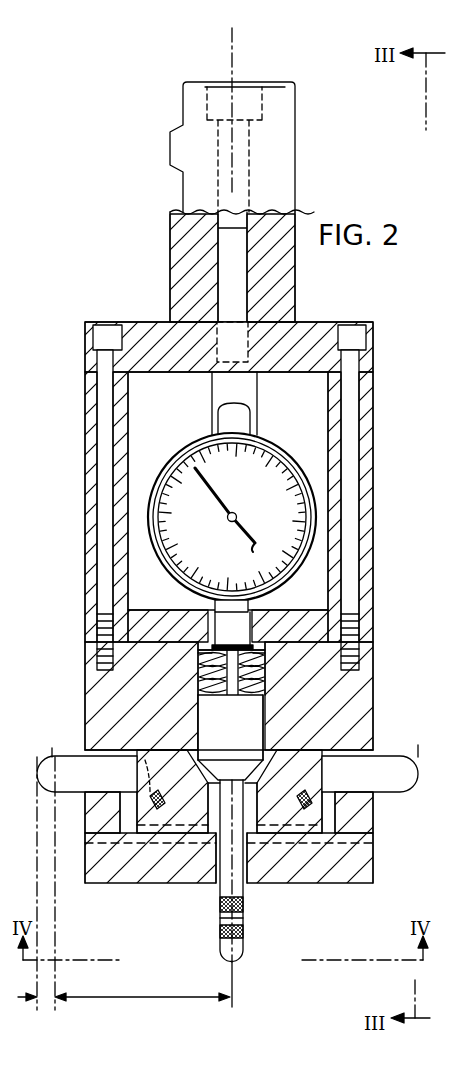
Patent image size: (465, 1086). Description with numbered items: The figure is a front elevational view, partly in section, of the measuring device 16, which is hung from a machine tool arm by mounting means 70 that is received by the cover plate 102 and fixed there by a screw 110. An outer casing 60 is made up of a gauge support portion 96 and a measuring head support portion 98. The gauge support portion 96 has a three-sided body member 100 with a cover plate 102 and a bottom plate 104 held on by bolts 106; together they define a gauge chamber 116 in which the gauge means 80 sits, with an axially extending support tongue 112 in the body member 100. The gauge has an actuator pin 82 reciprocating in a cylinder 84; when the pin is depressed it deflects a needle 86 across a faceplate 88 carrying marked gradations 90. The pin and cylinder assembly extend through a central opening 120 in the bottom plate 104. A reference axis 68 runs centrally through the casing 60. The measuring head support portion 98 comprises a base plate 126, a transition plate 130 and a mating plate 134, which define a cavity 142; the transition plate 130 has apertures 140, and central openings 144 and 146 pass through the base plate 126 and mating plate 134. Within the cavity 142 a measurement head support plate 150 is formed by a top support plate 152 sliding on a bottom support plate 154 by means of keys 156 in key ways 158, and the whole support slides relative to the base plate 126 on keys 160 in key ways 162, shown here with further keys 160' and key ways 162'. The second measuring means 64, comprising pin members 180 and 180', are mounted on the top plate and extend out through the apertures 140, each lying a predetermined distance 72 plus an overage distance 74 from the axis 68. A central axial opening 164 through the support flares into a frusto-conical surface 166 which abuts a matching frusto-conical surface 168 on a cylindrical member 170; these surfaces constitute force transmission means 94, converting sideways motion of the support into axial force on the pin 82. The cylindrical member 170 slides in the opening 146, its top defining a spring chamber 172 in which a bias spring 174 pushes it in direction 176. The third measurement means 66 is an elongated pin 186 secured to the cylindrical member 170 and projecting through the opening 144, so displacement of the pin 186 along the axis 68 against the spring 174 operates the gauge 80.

The measuring device 16 is at (404, 521).
The outer casing 60 is at (84, 660).
The second measuring means 64 is at (42, 772).
The third measurement means 66 is at (235, 963).
The reference axis 68 is at (232, 28).
The mounting means 70 is at (290, 168).
The predetermined distance 72 is at (163, 997).
The overage distance 74 is at (43, 1005).
The gauge means 80 is at (291, 446).
The actuator pin 82 is at (258, 667).
The cylinder 84 is at (194, 604).
The needle 86 is at (212, 490).
The faceplate 88 is at (190, 540).
The marked gradations 90 is at (163, 472).
The force transmission means 94 is at (263, 760).
The gauge support portion 96 is at (408, 468).
The measuring head support portion 98 is at (360, 694).
The body member 100 is at (370, 415).
The cover plate 102 is at (316, 322).
The bottom plate 104 is at (365, 622).
The bolts 106 is at (105, 372).
The screw 110 is at (230, 263).
The support tongue 112 is at (218, 386).
The gauge chamber 116 is at (143, 380).
The opening 120 is at (252, 613).
The base plate 126 is at (165, 884).
The transition plate 130 is at (312, 810).
The mating plate 134 is at (88, 702).
The apertures 140 is at (115, 793).
The cavity 142 is at (330, 805).
The opening 144 is at (216, 854).
The opening 146 is at (264, 690).
The measurement head support plate 150 is at (208, 805).
The top support plate 152 is at (172, 750).
The bottom support plate 154 is at (130, 818).
The keys 156 is at (157, 798).
The key ways 158 is at (156, 792).
The keys 160 is at (190, 856).
The hidden bore 160' is at (217, 845).
The key ways 162 is at (310, 857).
The hidden bore 162' is at (312, 846).
The central axial opening 164 is at (212, 812).
The frusto-conical surface area 166 is at (269, 762).
The frusto-conical surface area 168 is at (246, 775).
The cylindrical member 170 is at (238, 721).
The spring chamber 172 is at (208, 630).
The bias spring 174 is at (256, 635).
The direction 176 is at (200, 666).
The pin member 180 is at (421, 739).
The pin member 180' is at (61, 741).
The elongated pin 186 is at (243, 933).